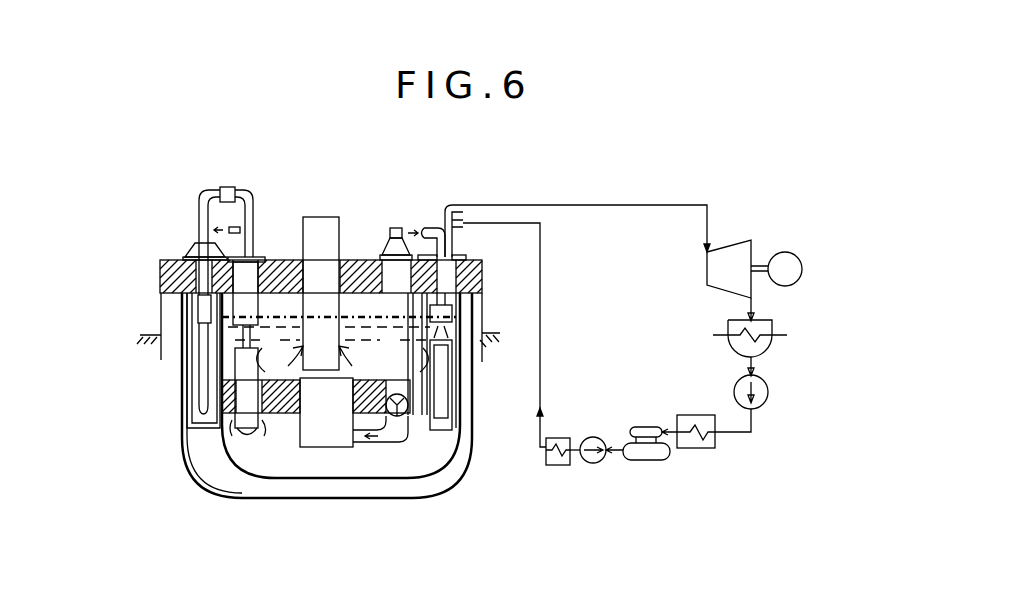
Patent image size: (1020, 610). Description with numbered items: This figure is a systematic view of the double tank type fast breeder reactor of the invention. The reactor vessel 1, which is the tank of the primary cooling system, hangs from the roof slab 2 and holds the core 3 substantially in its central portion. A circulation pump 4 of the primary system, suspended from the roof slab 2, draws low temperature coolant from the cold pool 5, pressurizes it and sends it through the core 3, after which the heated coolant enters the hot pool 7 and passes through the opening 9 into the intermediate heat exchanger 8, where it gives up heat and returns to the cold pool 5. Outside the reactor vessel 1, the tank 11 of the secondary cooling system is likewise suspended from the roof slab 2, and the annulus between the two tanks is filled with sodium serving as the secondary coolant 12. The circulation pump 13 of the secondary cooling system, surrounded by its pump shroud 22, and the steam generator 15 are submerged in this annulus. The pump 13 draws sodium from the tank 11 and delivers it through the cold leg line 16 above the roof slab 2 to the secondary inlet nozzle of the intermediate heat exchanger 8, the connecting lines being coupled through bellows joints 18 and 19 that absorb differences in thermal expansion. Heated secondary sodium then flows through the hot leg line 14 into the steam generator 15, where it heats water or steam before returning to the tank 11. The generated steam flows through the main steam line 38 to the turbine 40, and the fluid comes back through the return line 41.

The reactor vessel 1 is at (403, 481).
The roof slab 2 is at (483, 276).
The core 3 is at (258, 434).
The circulation pump 4 is at (396, 228).
The cold pool 5 is at (344, 479).
The hot pool 7 is at (341, 300).
The intermediate heat exchanger 8 is at (254, 257).
The opening 9 is at (283, 315).
The tank of the secondary cooling system 11 is at (434, 481).
The secondary coolant 12 is at (189, 372).
The circulation pump of the secondary cooling system 13 is at (186, 251).
The hot leg line 14 is at (428, 230).
The steam generator 15 is at (466, 257).
The cold leg line 16 is at (198, 210).
The joint 18 is at (198, 310).
The joint 19 is at (223, 186).
The pump shroud 22 is at (190, 399).
The main steam line 38 is at (451, 205).
The turbine 40 is at (737, 248).
The return line 41 is at (465, 221).